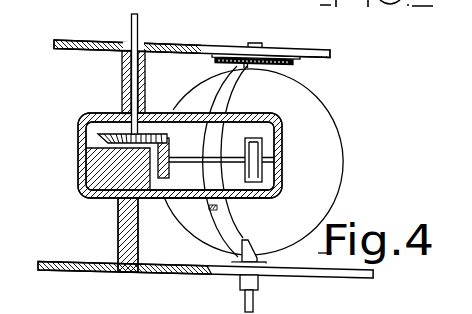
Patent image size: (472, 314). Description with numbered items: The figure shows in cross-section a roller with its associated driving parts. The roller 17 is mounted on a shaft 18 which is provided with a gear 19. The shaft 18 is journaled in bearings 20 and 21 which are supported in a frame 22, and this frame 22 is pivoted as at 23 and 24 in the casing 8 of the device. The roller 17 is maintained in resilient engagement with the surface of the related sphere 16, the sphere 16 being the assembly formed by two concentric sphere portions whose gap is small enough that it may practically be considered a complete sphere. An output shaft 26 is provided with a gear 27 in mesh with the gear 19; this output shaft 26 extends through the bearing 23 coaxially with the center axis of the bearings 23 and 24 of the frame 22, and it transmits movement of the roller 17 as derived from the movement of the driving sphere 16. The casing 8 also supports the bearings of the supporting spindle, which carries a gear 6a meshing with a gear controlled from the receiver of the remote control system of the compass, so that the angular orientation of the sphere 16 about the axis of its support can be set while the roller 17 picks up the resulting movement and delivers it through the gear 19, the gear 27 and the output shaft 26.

The gear 6a is at (283, 62).
The casing 8 is at (223, 45).
The sphere 16 is at (306, 107).
The roller 17 is at (251, 152).
The shaft 18 is at (192, 161).
The gear 19 is at (166, 144).
The bearing 20 is at (281, 160).
The bearing 21 is at (86, 195).
The frame 22 is at (159, 200).
The bearing 23 is at (147, 44).
The bearing 24 is at (120, 270).
The output shaft 26 is at (138, 24).
The gear 27 is at (84, 153).